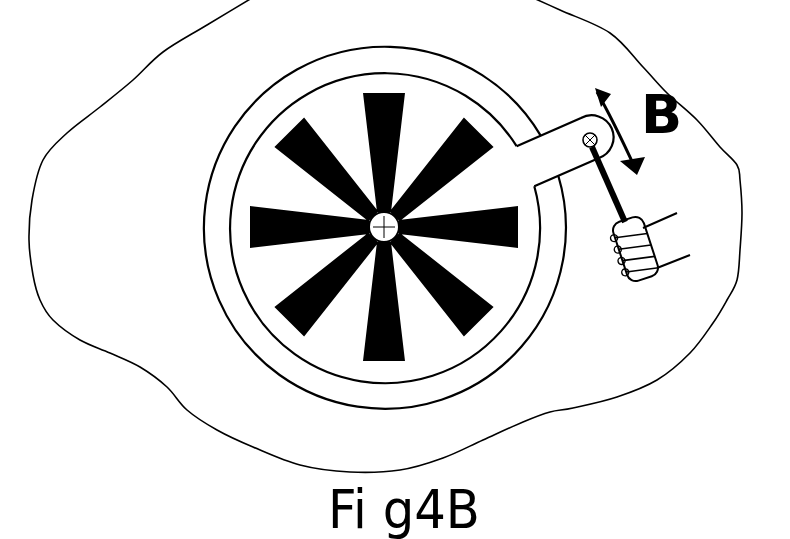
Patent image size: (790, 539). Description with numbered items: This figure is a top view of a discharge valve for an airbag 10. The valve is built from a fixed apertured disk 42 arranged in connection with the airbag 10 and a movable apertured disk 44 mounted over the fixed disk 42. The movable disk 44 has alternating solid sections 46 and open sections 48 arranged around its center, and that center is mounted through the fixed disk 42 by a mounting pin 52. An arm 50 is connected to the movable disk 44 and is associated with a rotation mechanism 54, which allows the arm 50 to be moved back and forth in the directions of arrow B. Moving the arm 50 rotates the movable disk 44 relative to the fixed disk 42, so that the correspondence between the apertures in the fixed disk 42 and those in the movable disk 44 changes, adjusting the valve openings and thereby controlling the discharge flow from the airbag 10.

The airbag 10 is at (93, 183).
The fixed apertured disk 42 is at (510, 92).
The movable apertured disk 44 is at (435, 74).
The solid sections 46 is at (292, 131).
The open sections 48 is at (390, 192).
The arm 50 is at (614, 200).
The mounting pin 52 is at (399, 236).
The rotation mechanism 54 is at (660, 277).